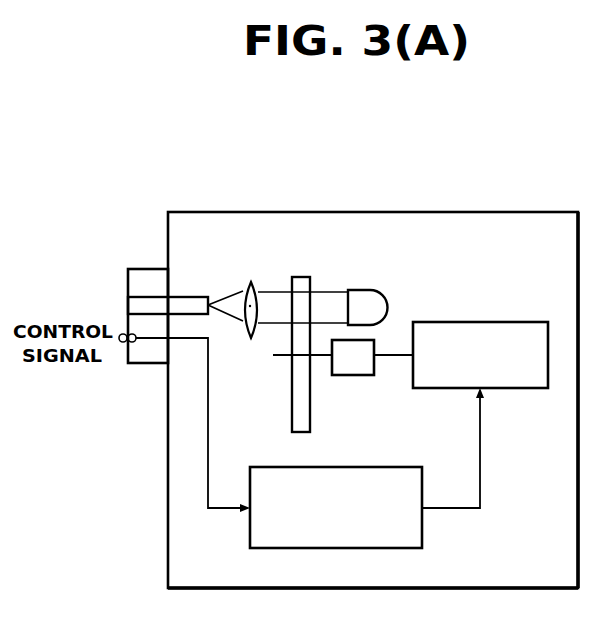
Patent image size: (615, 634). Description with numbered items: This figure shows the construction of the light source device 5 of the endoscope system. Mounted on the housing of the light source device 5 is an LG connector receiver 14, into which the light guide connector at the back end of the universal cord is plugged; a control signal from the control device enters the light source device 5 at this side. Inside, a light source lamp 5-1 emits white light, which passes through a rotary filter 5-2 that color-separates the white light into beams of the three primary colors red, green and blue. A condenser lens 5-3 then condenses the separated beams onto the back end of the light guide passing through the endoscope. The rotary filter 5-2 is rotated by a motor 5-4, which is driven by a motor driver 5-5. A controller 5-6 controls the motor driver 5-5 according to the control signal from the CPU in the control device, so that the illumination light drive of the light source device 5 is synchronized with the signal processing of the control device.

The light source device 5 is at (505, 212).
The LG connector receiver 14 is at (150, 269).
The light source lamp 5-1 is at (377, 302).
The rotary filter 5-2 is at (303, 277).
The condenser lens 5-3 is at (253, 282).
The motor 5-4 is at (362, 376).
The motor driver 5-5 is at (508, 322).
The controller 5-6 is at (423, 535).